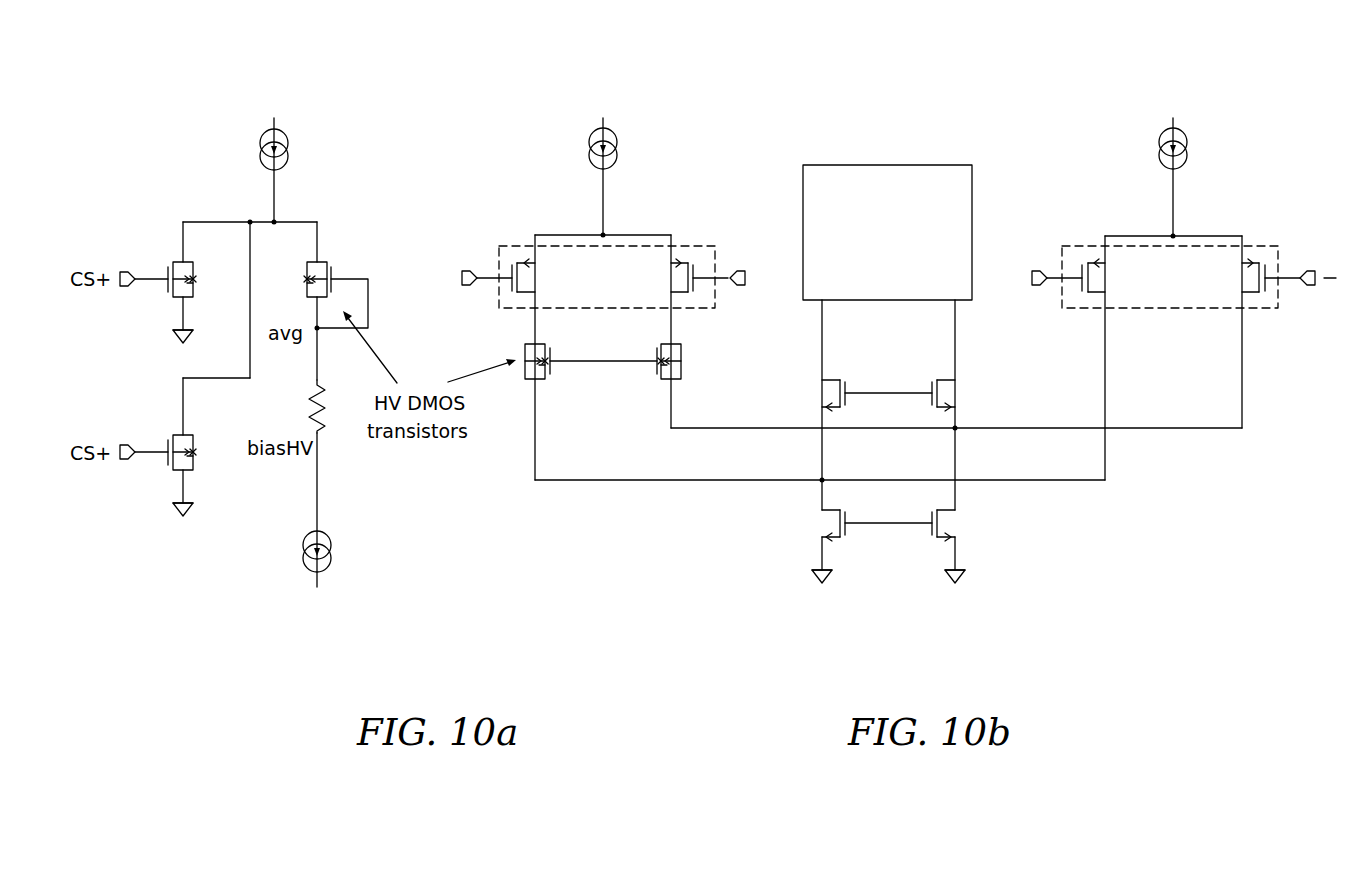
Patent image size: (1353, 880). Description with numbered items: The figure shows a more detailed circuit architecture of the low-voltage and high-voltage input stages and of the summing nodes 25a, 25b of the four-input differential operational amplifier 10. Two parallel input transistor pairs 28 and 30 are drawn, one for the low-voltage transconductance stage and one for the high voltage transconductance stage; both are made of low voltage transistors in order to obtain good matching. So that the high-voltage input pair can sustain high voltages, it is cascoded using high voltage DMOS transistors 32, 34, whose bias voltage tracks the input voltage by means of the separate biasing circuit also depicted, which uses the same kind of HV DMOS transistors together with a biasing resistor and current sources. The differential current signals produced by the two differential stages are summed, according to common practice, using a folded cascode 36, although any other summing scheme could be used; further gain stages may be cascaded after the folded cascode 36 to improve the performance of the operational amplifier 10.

The four-input differential operational amplifier 10 is at (996, 80).
The input transistor pair 28 is at (1205, 251).
The input transistor pair 30 is at (636, 250).
The high voltage DMOS transistor 32 is at (674, 374).
The high voltage DMOS transistor 34 is at (538, 374).
The folded cascode 36 is at (946, 181).
The summing node 25a is at (821, 484).
The summing node 25b is at (957, 426).